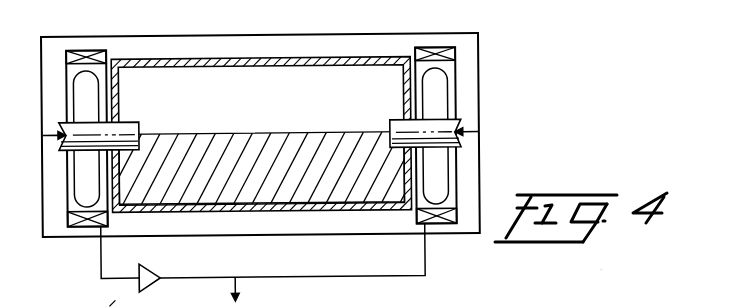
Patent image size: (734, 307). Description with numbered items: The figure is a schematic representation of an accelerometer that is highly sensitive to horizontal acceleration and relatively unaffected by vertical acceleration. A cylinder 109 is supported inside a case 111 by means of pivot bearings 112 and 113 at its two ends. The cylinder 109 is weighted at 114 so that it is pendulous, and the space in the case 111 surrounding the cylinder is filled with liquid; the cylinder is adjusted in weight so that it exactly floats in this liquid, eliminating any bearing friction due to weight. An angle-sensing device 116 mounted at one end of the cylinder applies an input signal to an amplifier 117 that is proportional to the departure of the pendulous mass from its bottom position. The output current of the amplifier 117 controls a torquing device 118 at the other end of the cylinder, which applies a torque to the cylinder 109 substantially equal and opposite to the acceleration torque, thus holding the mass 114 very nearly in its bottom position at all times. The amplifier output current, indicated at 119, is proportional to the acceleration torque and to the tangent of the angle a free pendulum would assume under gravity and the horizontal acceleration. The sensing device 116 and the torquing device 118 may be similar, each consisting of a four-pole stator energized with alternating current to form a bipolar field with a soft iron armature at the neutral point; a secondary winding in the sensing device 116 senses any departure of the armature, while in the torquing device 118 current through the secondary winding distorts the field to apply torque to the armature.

The cylinder 109 is at (281, 124).
The case 111 is at (260, 125).
The pivot bearing 112 is at (47, 128).
The pivot bearing 113 is at (467, 131).
The weight 114 is at (261, 182).
The angle-sensing device 116 is at (74, 155).
The amplifier 117 is at (149, 251).
The torquing device 118 is at (441, 152).
The amplifier output current 119 is at (246, 284).